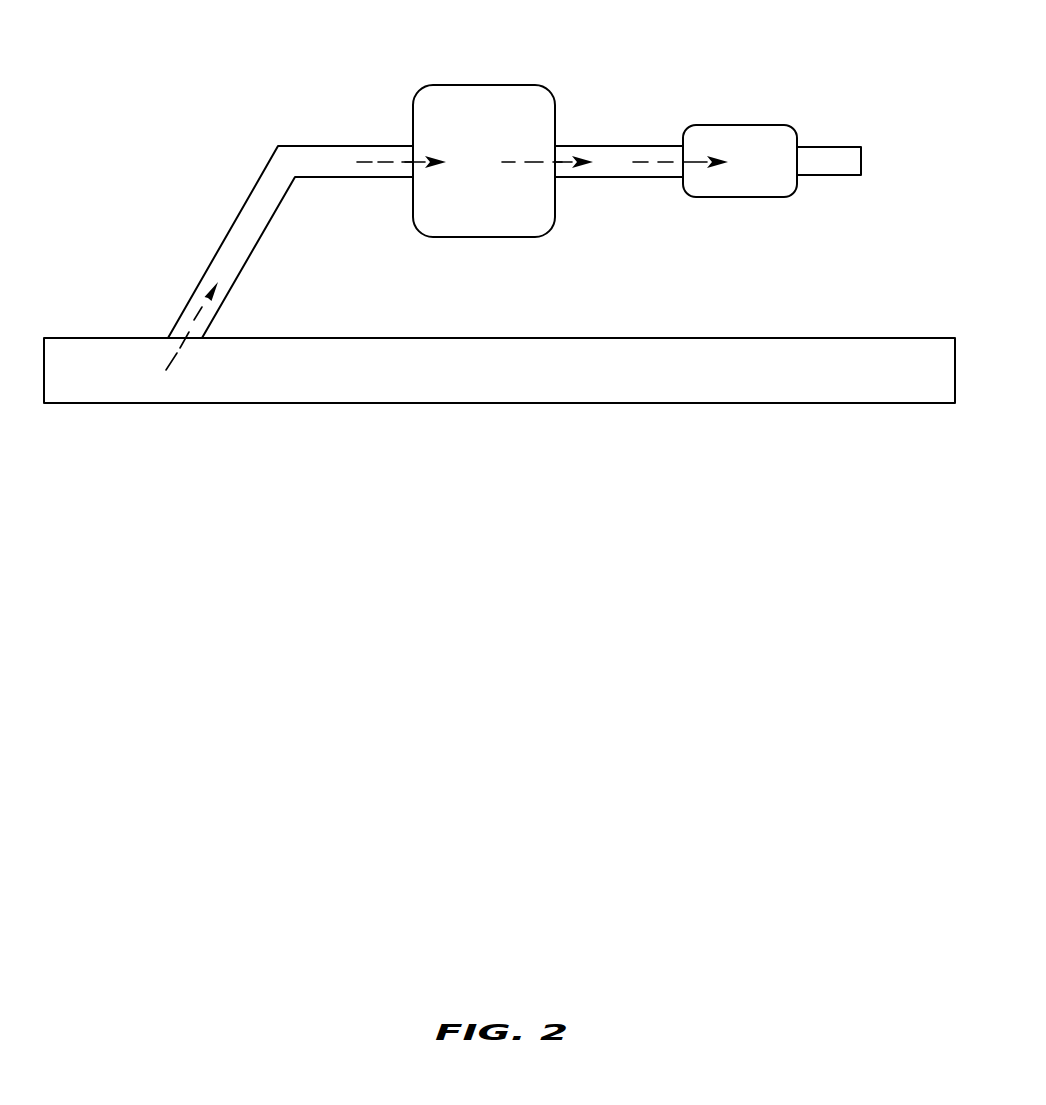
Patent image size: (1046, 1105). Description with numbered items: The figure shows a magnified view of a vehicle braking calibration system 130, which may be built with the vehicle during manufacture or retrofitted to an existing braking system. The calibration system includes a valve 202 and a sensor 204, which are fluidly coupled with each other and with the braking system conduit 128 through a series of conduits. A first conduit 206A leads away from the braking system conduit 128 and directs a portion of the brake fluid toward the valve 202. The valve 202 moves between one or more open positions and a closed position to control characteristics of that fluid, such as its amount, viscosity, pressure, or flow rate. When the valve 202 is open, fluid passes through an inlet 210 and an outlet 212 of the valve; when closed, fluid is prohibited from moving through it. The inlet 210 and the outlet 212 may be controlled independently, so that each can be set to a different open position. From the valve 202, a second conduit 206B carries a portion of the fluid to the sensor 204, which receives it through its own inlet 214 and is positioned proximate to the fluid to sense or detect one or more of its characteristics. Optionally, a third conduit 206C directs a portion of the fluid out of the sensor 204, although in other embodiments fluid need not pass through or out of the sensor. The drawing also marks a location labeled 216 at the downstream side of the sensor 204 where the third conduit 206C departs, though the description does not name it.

The vehicle braking calibration system 130 is at (291, 66).
The braking system conduit 128 is at (500, 404).
The valve 202 is at (455, 85).
The sensor 204 is at (740, 125).
The first conduit 206A is at (240, 213).
The second conduit 206B is at (593, 178).
The third conduit 206C is at (827, 177).
The inlet 210 is at (413, 160).
The outlet 212 is at (557, 160).
The inlet 214 is at (683, 160).
The outlet of second aftertreatment device 216 is at (797, 153).